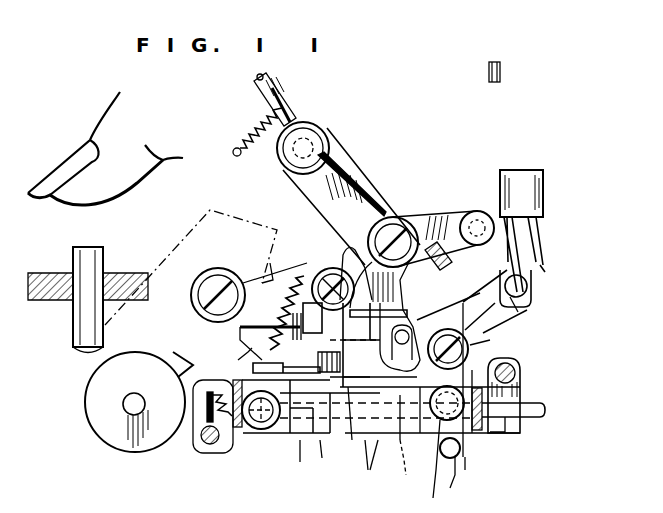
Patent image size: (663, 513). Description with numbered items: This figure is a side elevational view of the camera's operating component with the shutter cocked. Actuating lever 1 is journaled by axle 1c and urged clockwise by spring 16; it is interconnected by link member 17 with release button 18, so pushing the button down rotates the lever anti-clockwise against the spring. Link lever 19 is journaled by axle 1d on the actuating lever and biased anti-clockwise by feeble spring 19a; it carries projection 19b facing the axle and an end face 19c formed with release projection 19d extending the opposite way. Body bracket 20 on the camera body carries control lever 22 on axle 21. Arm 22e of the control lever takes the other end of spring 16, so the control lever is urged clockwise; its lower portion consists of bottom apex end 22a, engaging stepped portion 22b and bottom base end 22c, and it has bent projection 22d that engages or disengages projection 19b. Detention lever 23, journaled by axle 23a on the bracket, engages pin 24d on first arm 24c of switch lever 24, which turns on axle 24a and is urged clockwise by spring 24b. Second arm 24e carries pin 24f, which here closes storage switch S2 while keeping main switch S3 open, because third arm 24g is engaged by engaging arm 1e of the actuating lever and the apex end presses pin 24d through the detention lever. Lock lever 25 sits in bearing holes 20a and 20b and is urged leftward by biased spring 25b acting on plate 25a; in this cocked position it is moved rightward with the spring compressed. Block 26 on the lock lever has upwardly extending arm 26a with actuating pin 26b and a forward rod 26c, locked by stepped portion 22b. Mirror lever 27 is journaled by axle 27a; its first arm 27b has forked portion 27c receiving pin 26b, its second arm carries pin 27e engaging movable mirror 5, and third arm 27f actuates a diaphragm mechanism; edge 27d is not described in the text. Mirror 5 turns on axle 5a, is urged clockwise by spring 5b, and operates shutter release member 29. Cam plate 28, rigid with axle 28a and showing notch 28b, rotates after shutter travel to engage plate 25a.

The actuating lever 1 is at (281, 292).
The axle 1c is at (210, 270).
The axle 1d is at (360, 266).
The engaging arm 1e is at (377, 322).
The movable mirror 5 is at (348, 162).
The axle 5a is at (262, 72).
The spring 5b is at (262, 118).
The spring 16 is at (288, 306).
The link member 17 is at (205, 215).
The release button 18 is at (73, 268).
The link lever 19 is at (341, 345).
The feeble spring 19a is at (318, 268).
The projection 19b is at (368, 472).
The end face 19c is at (352, 442).
The release projection 19d is at (333, 459).
The body bracket 20 is at (232, 450).
The bearing hole 20a is at (235, 364).
The bearing hole 20b is at (508, 432).
The axle 21 is at (258, 430).
The control lever 22 is at (283, 440).
The bottom apex end 22a is at (405, 435).
The engaging stepped portion 22b is at (406, 476).
The bottom base end 22c is at (302, 465).
The bent projection 22d is at (290, 364).
The arm 22e is at (273, 311).
The detention lever 23 is at (442, 449).
The axle 23a is at (460, 450).
The switch lever 24 is at (500, 325).
The axle 24a is at (504, 343).
The spring 24b is at (464, 309).
The first arm 24c is at (485, 473).
The pin 24d is at (471, 482).
The second arm 24e is at (520, 312).
The pin 24f is at (527, 287).
The third arm 24g is at (313, 355).
The lock lever 25 is at (196, 440).
The plate 25a is at (222, 374).
The biased spring 25b is at (222, 450).
The block 26 is at (377, 410).
The upwardly extending arm 26a is at (448, 328).
The actuating pin 26b is at (420, 315).
The rod 26c is at (400, 445).
The mirror lever 27 is at (392, 200).
The axle 27a is at (398, 210).
The first arm 27b is at (466, 206).
The forked portion 27c is at (452, 264).
The release lever edge 27d is at (338, 168).
The pin 27e is at (312, 137).
The third arm 27f is at (434, 215).
The cam plate 28 is at (90, 393).
The axle 28a is at (128, 410).
The cam disc notch 28b is at (175, 348).
The shutter release member 29 is at (500, 75).
The storage switch S2 is at (536, 245).
The main switch S3 is at (528, 230).